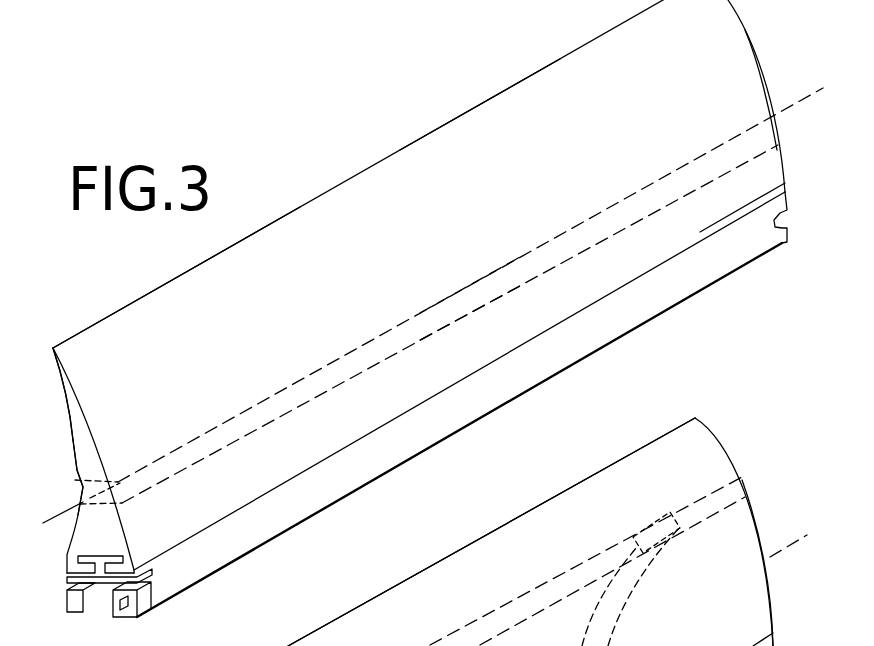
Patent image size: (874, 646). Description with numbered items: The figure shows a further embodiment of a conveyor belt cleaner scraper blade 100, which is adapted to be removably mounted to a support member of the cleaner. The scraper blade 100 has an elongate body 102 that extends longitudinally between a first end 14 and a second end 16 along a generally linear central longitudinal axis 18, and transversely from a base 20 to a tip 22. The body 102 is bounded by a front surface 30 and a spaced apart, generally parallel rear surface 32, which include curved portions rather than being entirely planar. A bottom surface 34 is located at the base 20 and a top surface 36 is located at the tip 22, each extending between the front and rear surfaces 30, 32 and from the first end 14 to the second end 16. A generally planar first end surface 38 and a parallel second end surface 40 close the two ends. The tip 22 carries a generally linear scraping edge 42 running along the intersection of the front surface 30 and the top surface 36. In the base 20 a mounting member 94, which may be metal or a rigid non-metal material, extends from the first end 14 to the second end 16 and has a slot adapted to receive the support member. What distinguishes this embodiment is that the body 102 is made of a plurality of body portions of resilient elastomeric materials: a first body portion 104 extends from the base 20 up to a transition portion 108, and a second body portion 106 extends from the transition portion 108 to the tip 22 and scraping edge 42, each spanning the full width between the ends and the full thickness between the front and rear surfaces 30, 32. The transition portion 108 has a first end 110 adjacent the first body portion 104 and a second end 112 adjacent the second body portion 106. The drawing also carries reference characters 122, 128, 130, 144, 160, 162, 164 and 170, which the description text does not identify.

The scraper blade 100 is at (423, 323).
The first end 14 is at (82, 405).
The second end 16 is at (750, 33).
The central longitudinal axis 18 is at (60, 513).
The base 20 is at (423, 440).
The tip 22 is at (347, 198).
The front surface 30 is at (127, 327).
The rear surface 32 is at (76, 453).
The bottom surface 34 is at (75, 611).
The top surface 36 is at (64, 389).
The first end surface 38 is at (95, 448).
The second end surface 40 is at (774, 125).
The scraping edge 42 is at (225, 256).
The mounting member 94 is at (87, 605).
The body 102 is at (550, 88).
The first body portion 104 is at (763, 178).
The second body portion 106 is at (747, 81).
The transition portion 108 is at (628, 211).
The first end of transition portion 110 is at (468, 313).
The second end of transition portion 112 is at (450, 295).
The direction of rotation 122 is at (743, 595).
The lower end portion 128 is at (737, 627).
The second blade 130 is at (437, 593).
The hidden passage 144 is at (623, 645).
The pivot pin 160 is at (730, 490).
The pin end 162 is at (718, 512).
The pin end 164 is at (713, 490).
The retaining block 170 is at (652, 532).